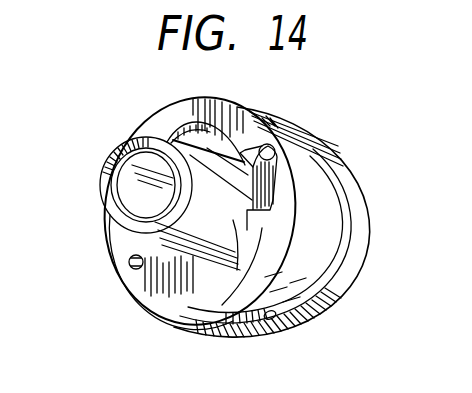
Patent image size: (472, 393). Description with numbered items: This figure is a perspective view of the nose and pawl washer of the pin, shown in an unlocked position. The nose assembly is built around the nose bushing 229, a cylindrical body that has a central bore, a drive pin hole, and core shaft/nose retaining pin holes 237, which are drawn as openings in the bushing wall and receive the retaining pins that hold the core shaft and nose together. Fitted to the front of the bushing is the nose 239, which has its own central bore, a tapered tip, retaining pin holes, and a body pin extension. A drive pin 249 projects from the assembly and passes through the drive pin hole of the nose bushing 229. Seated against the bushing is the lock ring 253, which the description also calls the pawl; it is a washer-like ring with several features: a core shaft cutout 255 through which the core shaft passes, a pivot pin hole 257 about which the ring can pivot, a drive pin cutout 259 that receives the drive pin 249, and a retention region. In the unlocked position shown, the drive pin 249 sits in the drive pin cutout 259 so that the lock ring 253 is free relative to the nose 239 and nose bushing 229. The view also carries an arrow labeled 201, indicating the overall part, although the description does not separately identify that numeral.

The connector assembly 201 is at (114, 322).
The nose bushing 229 is at (324, 177).
The core shaft/nose retaining pin holes 237 is at (250, 318).
The nose 239 is at (107, 160).
The drive pin 249 is at (270, 138).
The lock ring (pawl) 253 is at (249, 117).
The core shaft cutout 255 is at (180, 118).
The pivot pin hole 257 is at (130, 270).
The drive pin cutout 259 is at (272, 140).